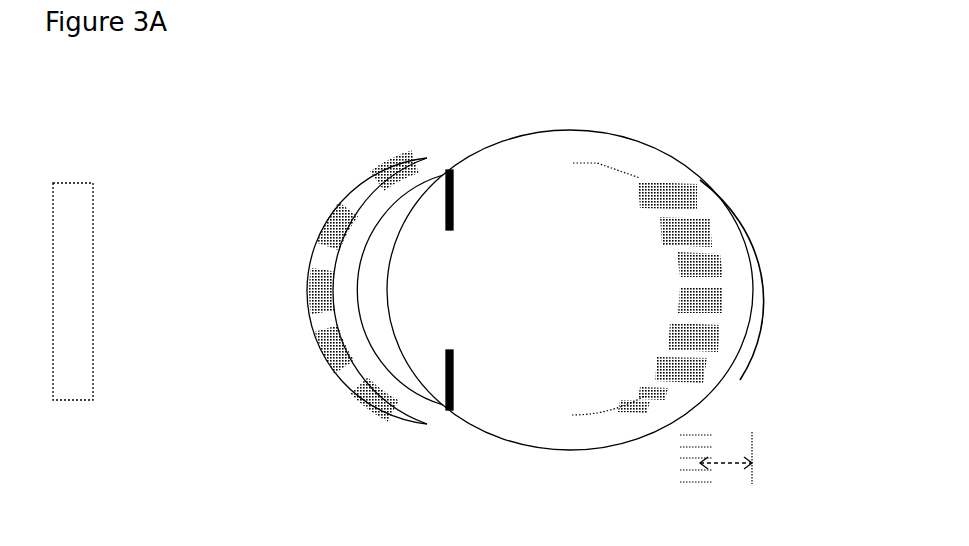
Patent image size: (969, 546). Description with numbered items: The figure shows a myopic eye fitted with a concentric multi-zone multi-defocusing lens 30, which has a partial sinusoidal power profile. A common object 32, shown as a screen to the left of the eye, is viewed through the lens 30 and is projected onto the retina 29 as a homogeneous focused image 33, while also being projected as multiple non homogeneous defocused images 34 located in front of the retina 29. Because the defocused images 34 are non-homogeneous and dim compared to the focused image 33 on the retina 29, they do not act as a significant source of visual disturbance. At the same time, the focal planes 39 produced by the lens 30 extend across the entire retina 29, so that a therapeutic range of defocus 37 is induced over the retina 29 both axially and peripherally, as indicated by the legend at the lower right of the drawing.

The common object 32 is at (94, 180).
The concentric multi-zone multi-defocusing lens 30 is at (370, 171).
The retina 29 is at (766, 280).
The multiple non homogeneous defocused images 34 is at (703, 172).
The focused image 33 is at (751, 213).
The focal planes 39 is at (602, 160).
The range of defocus 37 is at (728, 468).